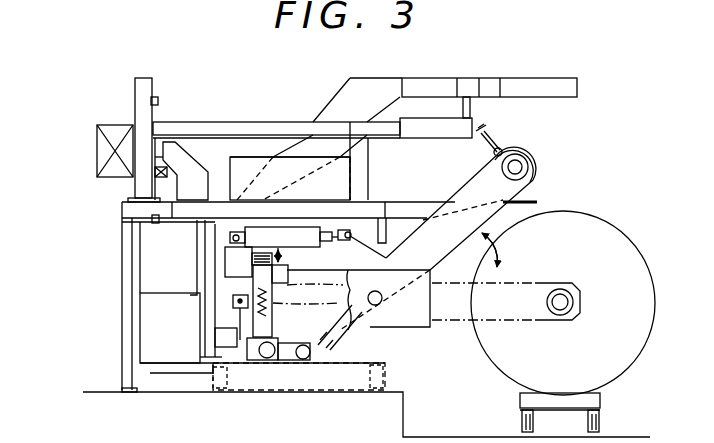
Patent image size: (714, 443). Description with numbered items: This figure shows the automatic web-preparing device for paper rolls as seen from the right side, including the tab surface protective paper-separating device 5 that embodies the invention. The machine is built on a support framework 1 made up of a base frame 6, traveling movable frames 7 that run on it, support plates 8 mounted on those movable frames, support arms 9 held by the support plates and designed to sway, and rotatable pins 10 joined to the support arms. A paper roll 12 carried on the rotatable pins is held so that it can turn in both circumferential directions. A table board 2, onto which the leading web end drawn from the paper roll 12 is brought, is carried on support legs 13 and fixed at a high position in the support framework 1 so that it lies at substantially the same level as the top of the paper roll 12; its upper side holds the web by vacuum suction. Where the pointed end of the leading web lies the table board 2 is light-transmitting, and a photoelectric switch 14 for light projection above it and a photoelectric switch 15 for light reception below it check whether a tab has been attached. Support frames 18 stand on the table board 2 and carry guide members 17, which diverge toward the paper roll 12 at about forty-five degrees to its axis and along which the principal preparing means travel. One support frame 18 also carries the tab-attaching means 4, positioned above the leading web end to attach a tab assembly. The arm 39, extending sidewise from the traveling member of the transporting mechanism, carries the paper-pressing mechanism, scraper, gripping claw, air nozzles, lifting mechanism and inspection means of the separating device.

The support framework 1 is at (422, 337).
The table board 2 is at (420, 206).
The tab-attaching means 4 is at (96, 137).
The tab surface protective paper-separating device 5 is at (160, 180).
The base frame 6 is at (264, 378).
The traveling movable frames 7 is at (310, 392).
The support plates 8 is at (402, 328).
The support arms 9 is at (433, 262).
The rotatable pins 10 is at (522, 167).
The paper roll 12 is at (597, 220).
The support legs 13 is at (213, 268).
The photoelectric switch for light projection 14 is at (160, 101).
The photoelectric switch for light reception 15 is at (152, 222).
The guide members 17 is at (227, 121).
The support frames 18 is at (147, 79).
The arm 39 is at (183, 159).